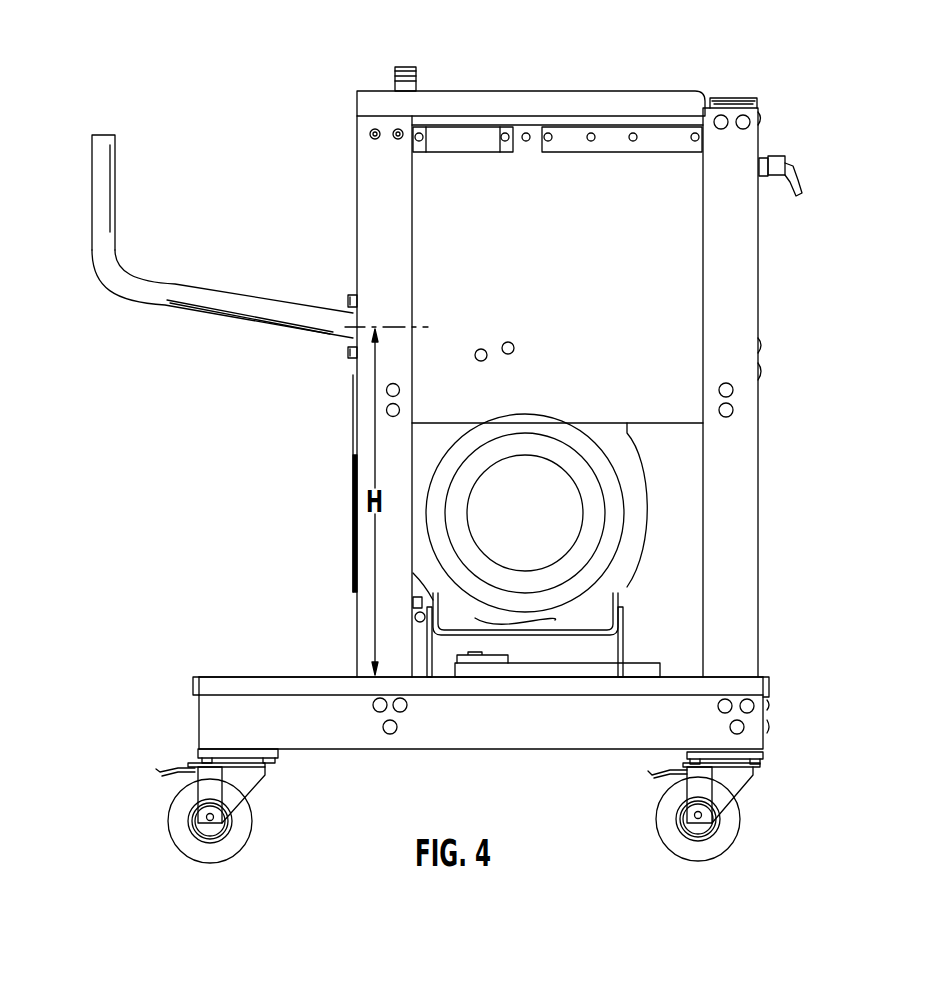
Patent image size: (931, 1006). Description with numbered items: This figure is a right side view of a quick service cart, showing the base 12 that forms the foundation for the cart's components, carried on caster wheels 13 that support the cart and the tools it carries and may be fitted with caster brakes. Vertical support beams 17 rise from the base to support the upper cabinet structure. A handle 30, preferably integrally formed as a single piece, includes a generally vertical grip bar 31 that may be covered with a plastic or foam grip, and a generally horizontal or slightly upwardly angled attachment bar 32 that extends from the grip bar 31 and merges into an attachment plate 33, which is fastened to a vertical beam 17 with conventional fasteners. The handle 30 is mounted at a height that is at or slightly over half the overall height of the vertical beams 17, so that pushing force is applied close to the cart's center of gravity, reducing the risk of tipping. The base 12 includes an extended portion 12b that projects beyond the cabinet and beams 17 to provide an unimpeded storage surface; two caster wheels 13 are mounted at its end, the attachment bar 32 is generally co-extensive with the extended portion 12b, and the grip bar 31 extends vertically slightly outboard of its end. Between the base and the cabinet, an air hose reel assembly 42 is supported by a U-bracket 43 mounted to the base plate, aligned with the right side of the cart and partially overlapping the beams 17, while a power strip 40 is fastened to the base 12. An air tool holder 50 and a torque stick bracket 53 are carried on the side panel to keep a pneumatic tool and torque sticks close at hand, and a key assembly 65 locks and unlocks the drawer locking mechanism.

The base 12 is at (205, 676).
The extended portion 12b is at (292, 675).
The caster wheels 13 is at (190, 765).
The support beams 17 is at (372, 192).
The handle 30 is at (203, 300).
The grip bar 31 is at (99, 133).
The attachment bar 32 is at (260, 312).
The attachment plate 33 is at (355, 378).
The power strip 40 is at (660, 663).
The air hose reel assembly 42 is at (647, 500).
The U-bracket 43 is at (627, 633).
The air tool holder 50 is at (507, 133).
The torque stick bracket 53 is at (634, 133).
The key assembly 65 is at (772, 155).